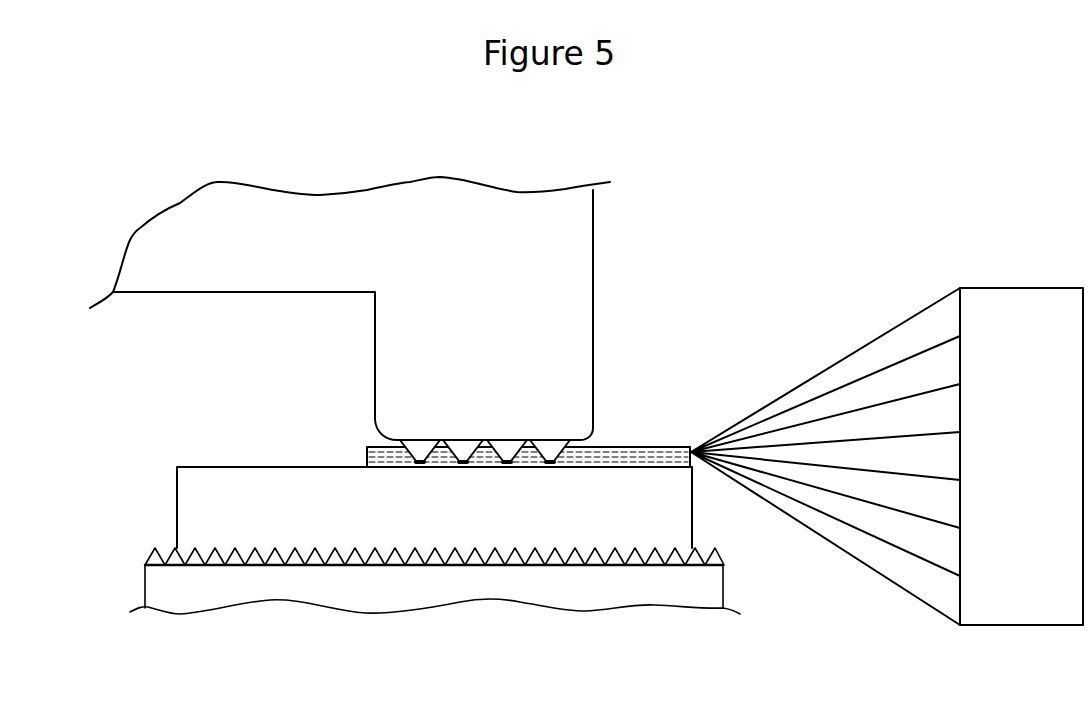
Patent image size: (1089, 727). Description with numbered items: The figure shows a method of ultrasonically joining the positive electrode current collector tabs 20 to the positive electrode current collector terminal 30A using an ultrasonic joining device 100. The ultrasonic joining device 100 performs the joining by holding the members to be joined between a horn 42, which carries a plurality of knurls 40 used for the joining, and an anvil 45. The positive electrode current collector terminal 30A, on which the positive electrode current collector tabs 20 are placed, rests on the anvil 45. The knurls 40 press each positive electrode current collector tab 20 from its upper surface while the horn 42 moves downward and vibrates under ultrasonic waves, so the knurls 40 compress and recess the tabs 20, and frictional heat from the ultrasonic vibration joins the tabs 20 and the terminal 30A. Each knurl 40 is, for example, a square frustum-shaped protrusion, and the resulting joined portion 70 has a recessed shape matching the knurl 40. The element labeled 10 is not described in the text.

The ultrasonic joining device 100 is at (627, 218).
The light source 10 is at (1020, 287).
The positive electrode current collector tabs 20 is at (860, 470).
The positive electrode current collector terminal 30A is at (215, 478).
The knurls 40 is at (507, 447).
The horn 42 is at (233, 278).
The anvil 45 is at (148, 553).
The joined portion 70 is at (462, 475).